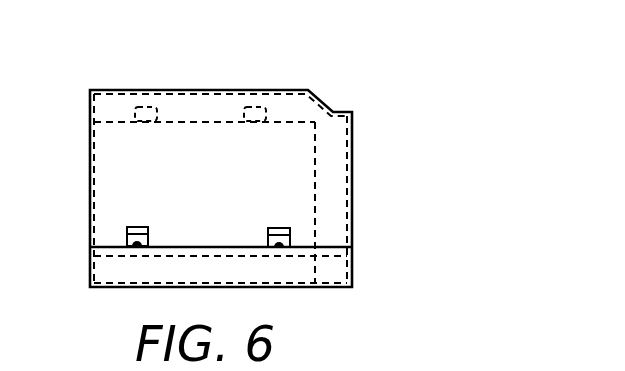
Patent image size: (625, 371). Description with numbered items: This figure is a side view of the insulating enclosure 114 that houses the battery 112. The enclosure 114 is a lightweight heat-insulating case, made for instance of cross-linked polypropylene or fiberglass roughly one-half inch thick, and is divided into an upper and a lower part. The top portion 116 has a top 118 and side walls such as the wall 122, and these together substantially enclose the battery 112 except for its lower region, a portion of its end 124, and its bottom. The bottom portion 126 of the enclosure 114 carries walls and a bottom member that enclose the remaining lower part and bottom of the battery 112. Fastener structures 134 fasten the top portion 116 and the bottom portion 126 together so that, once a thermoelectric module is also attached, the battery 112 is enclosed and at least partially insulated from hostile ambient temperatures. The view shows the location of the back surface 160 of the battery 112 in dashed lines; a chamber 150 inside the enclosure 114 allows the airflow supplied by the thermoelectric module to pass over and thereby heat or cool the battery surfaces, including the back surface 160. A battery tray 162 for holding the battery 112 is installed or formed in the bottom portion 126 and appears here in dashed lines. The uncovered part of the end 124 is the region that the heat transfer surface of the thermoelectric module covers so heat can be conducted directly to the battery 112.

The battery 112 is at (238, 204).
The insulating enclosure 114 is at (359, 178).
The top portion 116 is at (353, 120).
The top 118 is at (187, 90).
The side wall 122 is at (90, 182).
The end of battery 124 is at (94, 128).
The bottom portion 126 is at (353, 272).
The fastener structure 134 is at (278, 247).
The chamber 150 is at (332, 189).
The back surface of battery 160 is at (318, 155).
The battery tray 162 is at (130, 255).